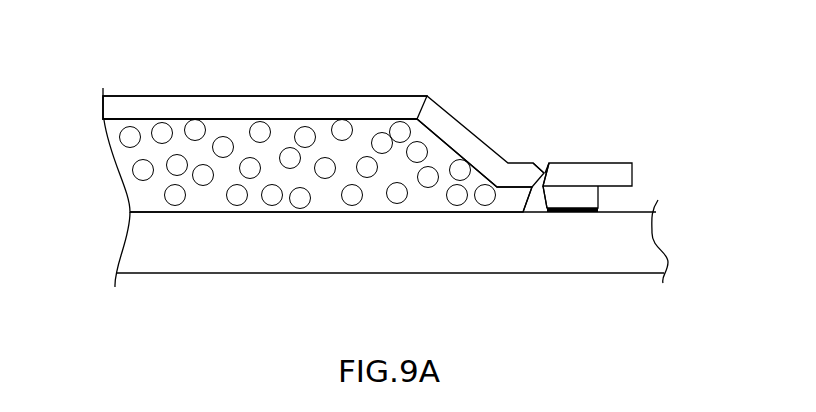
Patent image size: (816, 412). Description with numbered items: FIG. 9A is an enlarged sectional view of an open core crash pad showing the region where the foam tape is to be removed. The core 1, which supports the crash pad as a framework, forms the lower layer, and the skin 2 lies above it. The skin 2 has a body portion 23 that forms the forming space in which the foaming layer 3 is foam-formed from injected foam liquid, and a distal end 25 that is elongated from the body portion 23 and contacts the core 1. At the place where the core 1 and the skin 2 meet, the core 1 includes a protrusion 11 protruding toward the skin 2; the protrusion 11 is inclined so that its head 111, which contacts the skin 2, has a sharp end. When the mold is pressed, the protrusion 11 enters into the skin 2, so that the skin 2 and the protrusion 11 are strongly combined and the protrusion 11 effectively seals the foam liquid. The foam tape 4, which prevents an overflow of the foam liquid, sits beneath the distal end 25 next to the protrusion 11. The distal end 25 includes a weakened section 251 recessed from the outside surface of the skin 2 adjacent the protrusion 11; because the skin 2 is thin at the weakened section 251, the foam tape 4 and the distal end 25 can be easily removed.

The core 1 is at (137, 243).
The skin 2 is at (108, 104).
The foaming layer 3 is at (137, 172).
The foam tape 4 is at (598, 200).
The protrusion 11 is at (537, 200).
The body portion 23 is at (338, 108).
The distal end 25 is at (624, 170).
The head 111 is at (547, 176).
The weakened section 251 is at (543, 171).